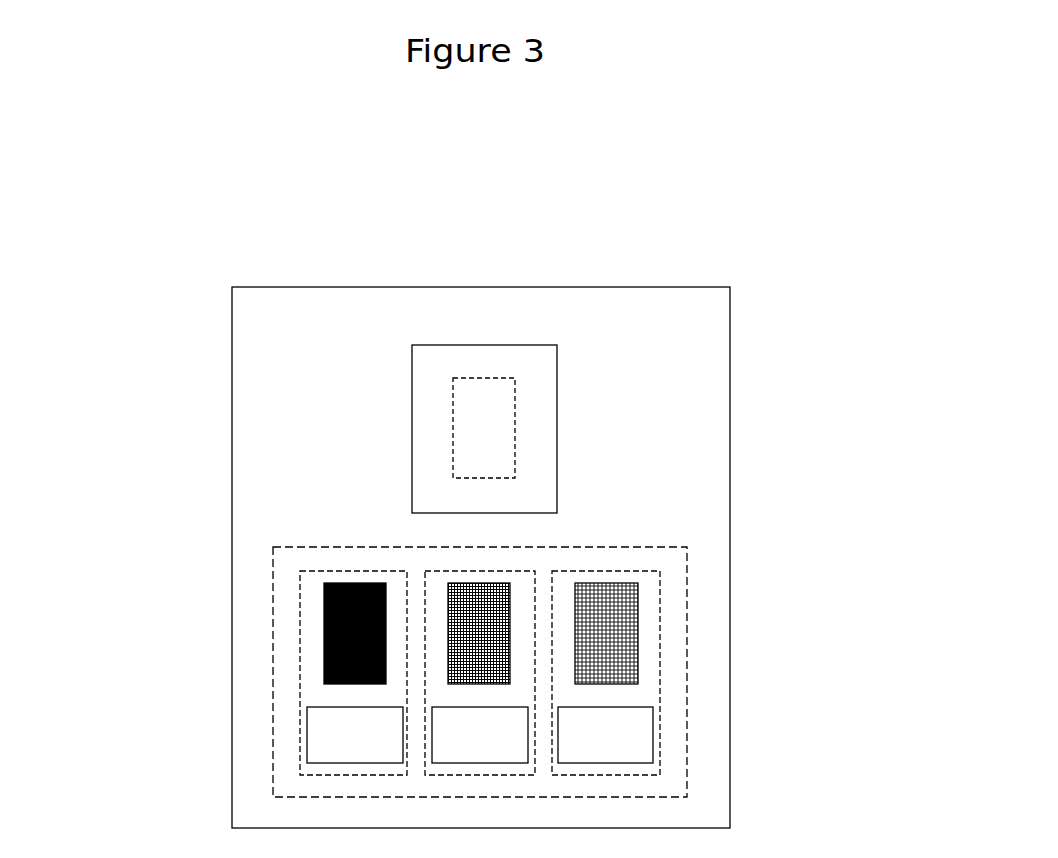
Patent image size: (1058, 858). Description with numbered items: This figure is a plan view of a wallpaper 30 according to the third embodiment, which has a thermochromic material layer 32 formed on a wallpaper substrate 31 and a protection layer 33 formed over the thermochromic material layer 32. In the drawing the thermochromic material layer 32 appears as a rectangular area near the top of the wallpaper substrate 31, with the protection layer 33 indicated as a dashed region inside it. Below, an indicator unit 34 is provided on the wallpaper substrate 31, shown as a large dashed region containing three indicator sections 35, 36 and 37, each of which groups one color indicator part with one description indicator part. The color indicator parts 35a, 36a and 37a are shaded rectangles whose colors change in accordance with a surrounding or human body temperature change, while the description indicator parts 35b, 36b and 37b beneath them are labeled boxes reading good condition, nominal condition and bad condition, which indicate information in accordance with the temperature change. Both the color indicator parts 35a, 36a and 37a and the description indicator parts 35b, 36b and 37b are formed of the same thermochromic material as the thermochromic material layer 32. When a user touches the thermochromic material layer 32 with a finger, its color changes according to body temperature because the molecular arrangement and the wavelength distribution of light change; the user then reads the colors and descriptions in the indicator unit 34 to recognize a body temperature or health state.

The wallpaper 30 is at (226, 351).
The wallpaper substrate 31 is at (362, 337).
The thermochromic material layer 32 is at (490, 422).
The protection layer 33 is at (538, 383).
The indicator unit 34 is at (687, 579).
The good condition indicator panel 35 is at (352, 567).
The nominal condition indicator panel 36 is at (420, 702).
The bad condition indicator panel 37 is at (662, 663).
The color indicator part 35a is at (320, 633).
The color indicator part 36a is at (447, 637).
The color indicator part 37a is at (572, 631).
The description indicator part 35b is at (370, 758).
The description indicator part 36b is at (505, 758).
The description indicator part 37b is at (615, 759).